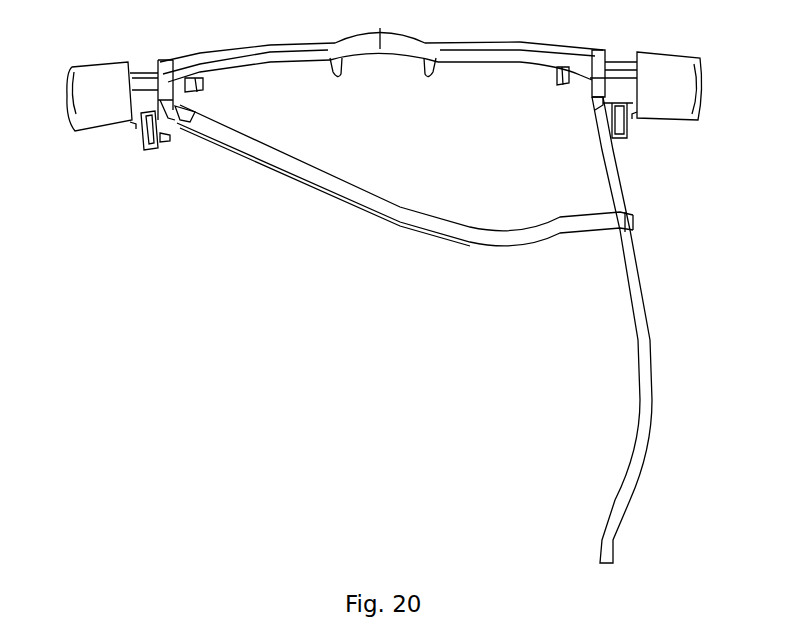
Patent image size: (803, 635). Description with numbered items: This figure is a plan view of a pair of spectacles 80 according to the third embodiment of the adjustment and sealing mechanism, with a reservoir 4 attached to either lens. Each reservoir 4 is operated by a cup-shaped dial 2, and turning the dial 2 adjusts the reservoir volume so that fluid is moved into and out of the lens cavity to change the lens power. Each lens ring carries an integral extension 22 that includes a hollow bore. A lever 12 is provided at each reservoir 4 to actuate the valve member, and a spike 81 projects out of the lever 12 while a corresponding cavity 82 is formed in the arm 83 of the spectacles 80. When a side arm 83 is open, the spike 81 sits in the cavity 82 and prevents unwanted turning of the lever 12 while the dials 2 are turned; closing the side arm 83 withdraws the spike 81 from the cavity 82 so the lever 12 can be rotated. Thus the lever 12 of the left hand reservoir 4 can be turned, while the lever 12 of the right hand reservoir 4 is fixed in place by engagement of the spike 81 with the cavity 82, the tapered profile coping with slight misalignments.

The reservoir 4 is at (82, 52).
The dial 2 is at (108, 66).
The integral extension 22 is at (200, 85).
The lever 12 is at (143, 143).
The spike 81 is at (163, 147).
The cavity 82 is at (193, 125).
The arm 83 is at (345, 180).
The spectacles 80 is at (323, 258).